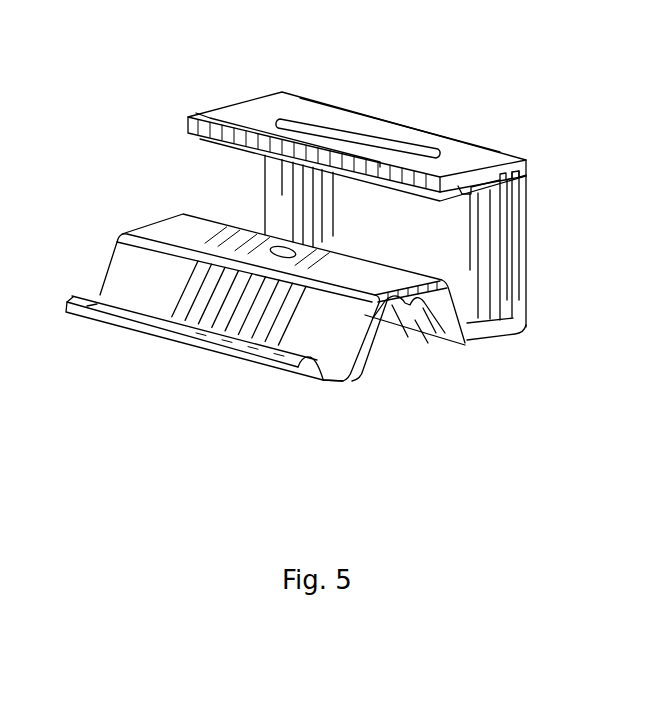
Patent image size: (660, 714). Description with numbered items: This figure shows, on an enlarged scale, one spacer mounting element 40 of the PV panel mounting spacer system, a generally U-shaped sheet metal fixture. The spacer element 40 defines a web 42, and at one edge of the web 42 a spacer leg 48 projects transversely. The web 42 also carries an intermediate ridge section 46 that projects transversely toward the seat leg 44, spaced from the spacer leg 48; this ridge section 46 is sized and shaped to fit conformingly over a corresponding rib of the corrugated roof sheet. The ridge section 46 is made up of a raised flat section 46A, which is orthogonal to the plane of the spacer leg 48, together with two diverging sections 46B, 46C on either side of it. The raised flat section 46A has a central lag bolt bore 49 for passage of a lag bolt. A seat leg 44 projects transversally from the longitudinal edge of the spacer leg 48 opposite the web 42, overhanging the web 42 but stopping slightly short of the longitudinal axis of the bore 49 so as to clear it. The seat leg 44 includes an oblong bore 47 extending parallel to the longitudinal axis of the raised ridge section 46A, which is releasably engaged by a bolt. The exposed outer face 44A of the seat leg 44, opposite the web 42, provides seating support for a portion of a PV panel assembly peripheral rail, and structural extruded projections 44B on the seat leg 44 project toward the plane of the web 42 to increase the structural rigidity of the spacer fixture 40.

The spacer mounting element 40 is at (356, 249).
The web 42 is at (507, 343).
The seat leg 44 is at (354, 189).
The exposed outer face 44A is at (472, 154).
The structural extruded projections 44B is at (460, 190).
The intermediate ridge section 46 is at (298, 285).
The raised flat section 46A is at (287, 253).
The diverging section 46B is at (160, 287).
The diverging section 46C is at (433, 318).
The oblong bore 47 is at (360, 138).
The spacer leg 48 is at (418, 223).
The central lag bolt bore 49 is at (258, 245).